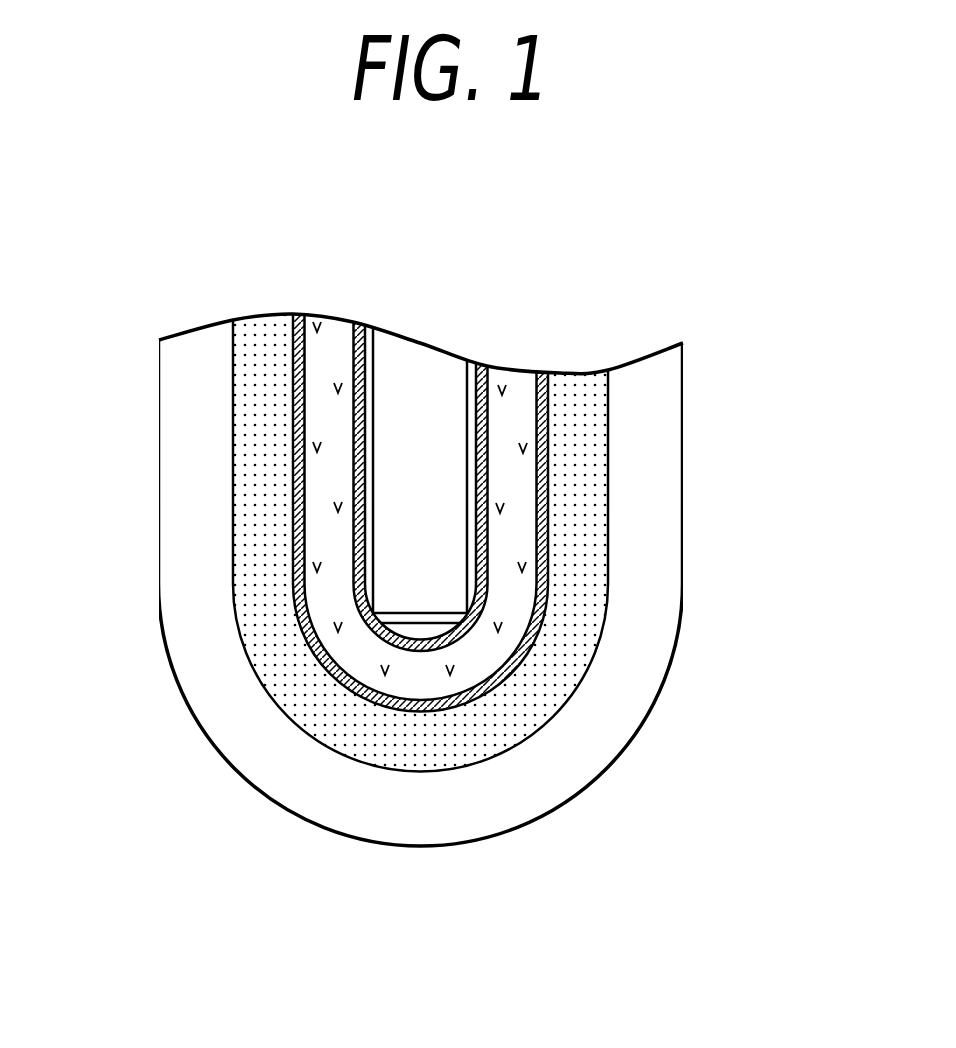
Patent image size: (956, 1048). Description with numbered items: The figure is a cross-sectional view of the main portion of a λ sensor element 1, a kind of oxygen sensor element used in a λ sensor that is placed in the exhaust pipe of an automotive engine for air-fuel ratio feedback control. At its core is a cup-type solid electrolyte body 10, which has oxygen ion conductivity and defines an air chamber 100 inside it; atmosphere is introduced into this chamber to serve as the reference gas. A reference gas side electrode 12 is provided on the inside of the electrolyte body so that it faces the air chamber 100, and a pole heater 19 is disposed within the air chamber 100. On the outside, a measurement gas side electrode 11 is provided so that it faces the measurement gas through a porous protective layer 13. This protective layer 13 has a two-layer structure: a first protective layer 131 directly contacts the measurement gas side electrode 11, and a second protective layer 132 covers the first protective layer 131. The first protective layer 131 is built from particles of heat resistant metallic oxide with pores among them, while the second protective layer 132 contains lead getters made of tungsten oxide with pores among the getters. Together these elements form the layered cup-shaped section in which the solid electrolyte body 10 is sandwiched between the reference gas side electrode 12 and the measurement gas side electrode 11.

The λ sensor element 1 is at (155, 740).
The solid electrolyte body 10 is at (485, 650).
The measurement gas side electrode 11 is at (418, 712).
The reference gas side electrode 12 is at (483, 370).
The porous protective layer 13 is at (778, 545).
The pole heater 19 is at (412, 378).
The air chamber 100 is at (470, 427).
The first protective layer 131 is at (567, 568).
The second protective layer 132 is at (637, 628).